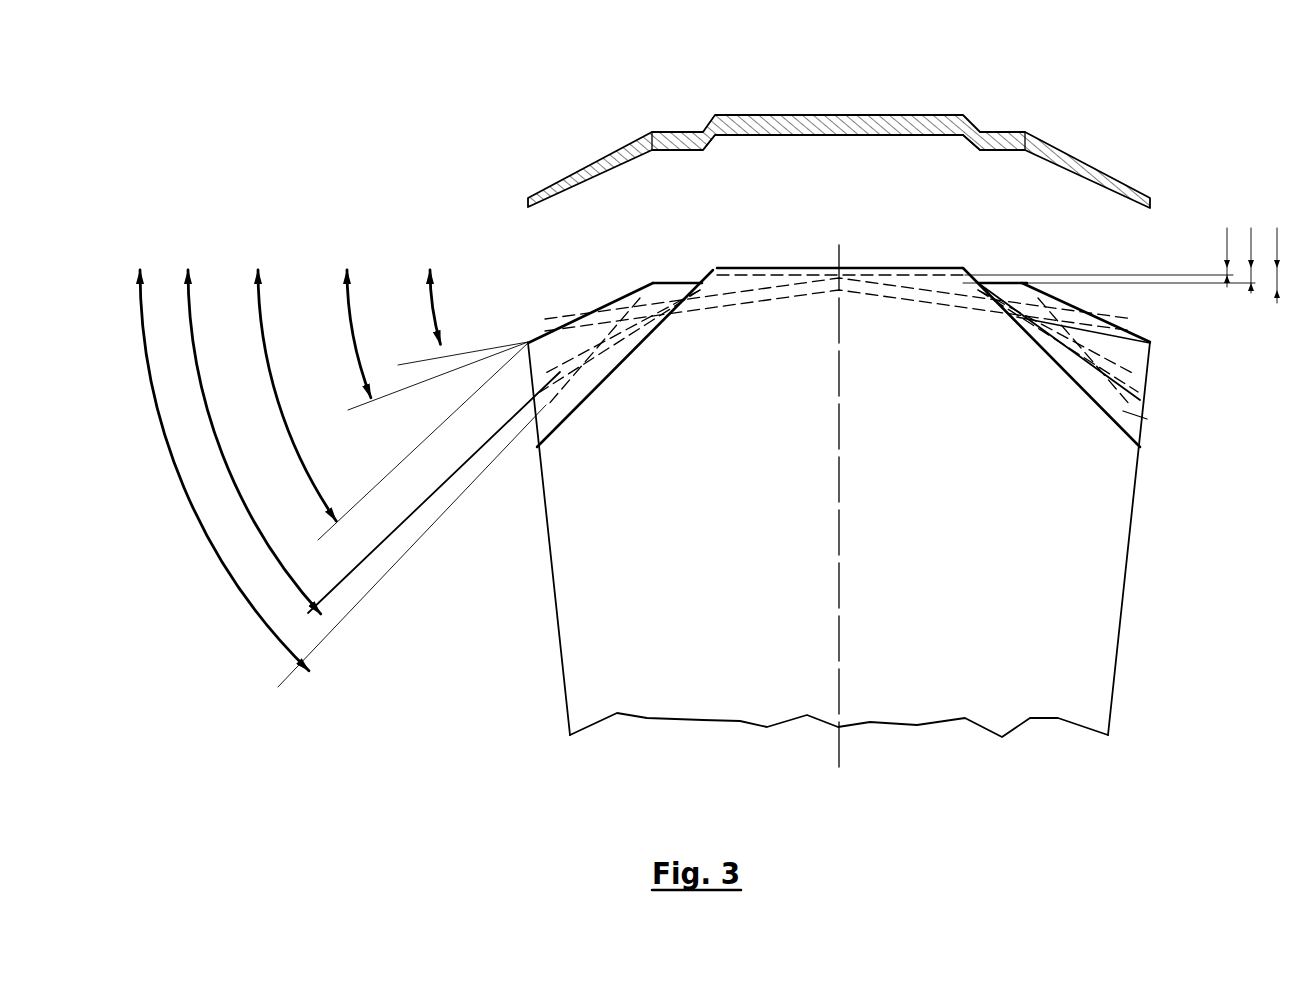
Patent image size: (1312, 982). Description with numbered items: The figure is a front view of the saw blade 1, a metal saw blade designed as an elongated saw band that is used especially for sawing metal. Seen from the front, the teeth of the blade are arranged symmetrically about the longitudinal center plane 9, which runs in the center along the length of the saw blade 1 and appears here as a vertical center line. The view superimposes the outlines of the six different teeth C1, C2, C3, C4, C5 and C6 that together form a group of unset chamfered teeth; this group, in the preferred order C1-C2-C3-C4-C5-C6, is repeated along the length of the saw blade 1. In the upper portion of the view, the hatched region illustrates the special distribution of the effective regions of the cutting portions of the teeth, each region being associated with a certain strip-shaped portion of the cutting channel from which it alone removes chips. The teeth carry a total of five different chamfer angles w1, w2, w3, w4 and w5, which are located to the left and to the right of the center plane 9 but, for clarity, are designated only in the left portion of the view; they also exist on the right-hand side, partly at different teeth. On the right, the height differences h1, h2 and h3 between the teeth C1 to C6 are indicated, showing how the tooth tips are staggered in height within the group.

The saw blade 1 is at (792, 245).
The longitudinal center plane 9 is at (840, 742).
The tooth C1 is at (560, 665).
The tooth C2 is at (713, 268).
The tooth C3 is at (600, 355).
The tooth C4 is at (657, 297).
The tooth C5 is at (612, 305).
The tooth C6 is at (698, 313).
The height difference h1 is at (1216, 257).
The height difference h2 is at (1241, 260).
The height difference h3 is at (1267, 265).
The chamfer angle w1 is at (447, 307).
The chamfer angle w2 is at (366, 334).
The chamfer angle w3 is at (297, 395).
The chamfer angle w4 is at (254, 442).
The chamfer angle w5 is at (224, 470).